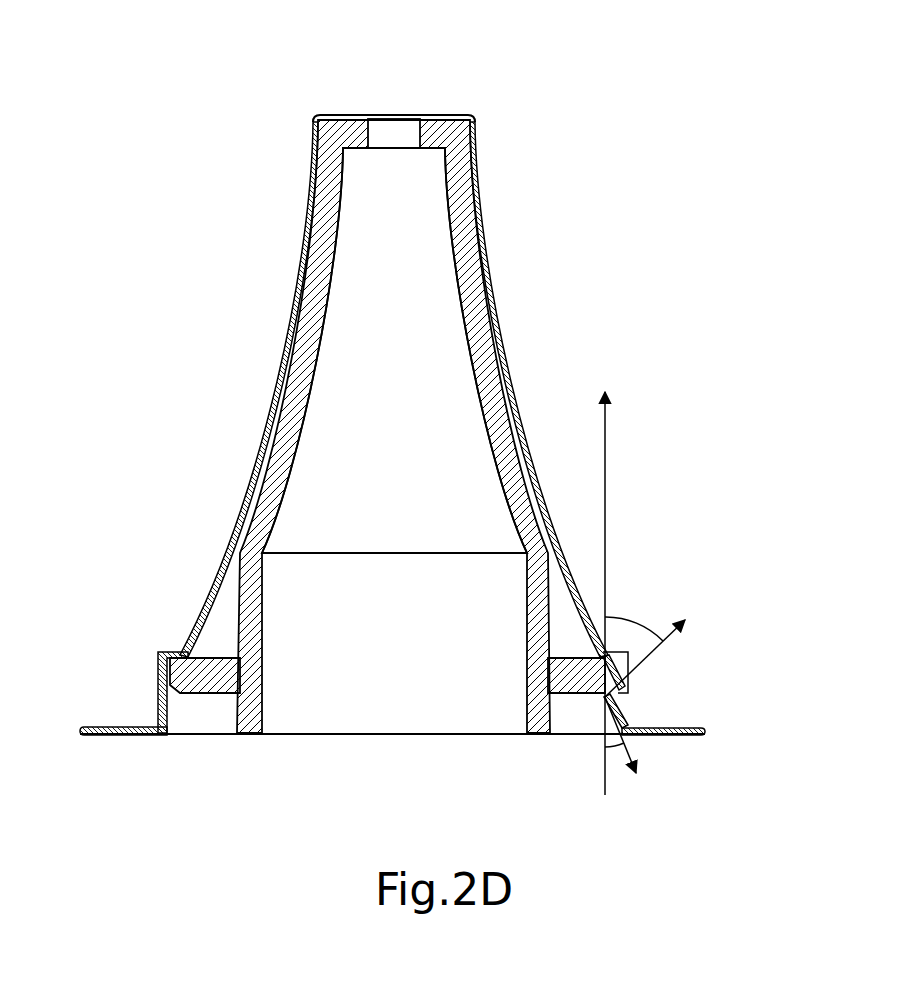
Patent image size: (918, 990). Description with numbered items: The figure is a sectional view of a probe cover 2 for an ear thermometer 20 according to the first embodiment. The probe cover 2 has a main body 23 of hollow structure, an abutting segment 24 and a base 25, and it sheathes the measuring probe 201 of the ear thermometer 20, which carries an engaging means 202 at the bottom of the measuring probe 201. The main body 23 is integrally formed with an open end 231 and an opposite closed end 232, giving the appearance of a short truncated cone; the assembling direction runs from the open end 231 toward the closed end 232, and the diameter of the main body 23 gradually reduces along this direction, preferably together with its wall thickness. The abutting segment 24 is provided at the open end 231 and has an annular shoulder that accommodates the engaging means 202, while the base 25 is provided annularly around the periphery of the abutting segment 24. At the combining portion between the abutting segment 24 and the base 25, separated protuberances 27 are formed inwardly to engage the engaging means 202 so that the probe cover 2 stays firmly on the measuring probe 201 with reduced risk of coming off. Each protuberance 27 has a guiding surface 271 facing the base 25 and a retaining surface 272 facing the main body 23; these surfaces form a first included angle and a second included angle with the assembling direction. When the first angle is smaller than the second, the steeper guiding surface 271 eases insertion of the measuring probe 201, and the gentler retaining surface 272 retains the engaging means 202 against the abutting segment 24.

The probe cover 2 is at (113, 46).
The ear thermometer 20 is at (370, 345).
The measuring probe 201 is at (398, 215).
The engaging means 202 is at (250, 672).
The main body 23 is at (510, 375).
The closed end 232 is at (350, 115).
The open end 231 is at (558, 735).
The abutting segment 24 is at (610, 654).
The base 25 is at (705, 728).
The protuberance 27 is at (690, 694).
The guiding surface 271 is at (625, 719).
The retaining surface 272 is at (625, 690).